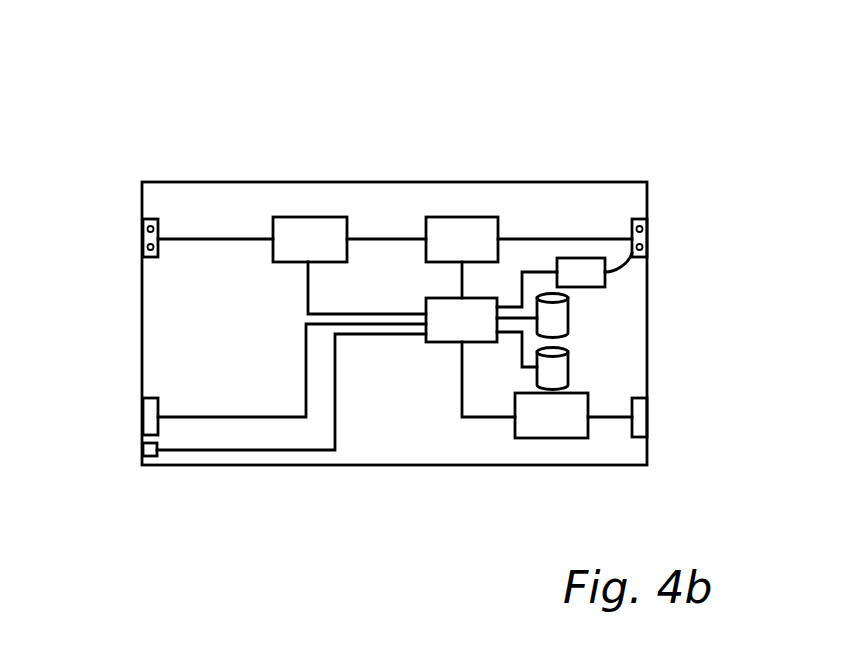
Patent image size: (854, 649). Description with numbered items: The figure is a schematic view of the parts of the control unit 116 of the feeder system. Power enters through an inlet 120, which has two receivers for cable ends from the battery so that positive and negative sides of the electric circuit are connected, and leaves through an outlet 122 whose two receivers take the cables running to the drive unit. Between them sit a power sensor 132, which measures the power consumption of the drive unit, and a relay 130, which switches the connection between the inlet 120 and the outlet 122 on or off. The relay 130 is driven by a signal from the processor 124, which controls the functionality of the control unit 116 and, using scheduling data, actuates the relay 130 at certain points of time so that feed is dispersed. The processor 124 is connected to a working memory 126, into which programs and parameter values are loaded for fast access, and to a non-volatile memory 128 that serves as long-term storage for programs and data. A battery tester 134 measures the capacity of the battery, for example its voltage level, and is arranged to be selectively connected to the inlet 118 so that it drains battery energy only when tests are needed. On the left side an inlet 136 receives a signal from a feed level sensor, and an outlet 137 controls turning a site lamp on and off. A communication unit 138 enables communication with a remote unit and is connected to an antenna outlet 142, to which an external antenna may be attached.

The control unit 116 is at (394, 281).
The inlet 118 is at (620, 182).
The inlet 120 is at (648, 238).
The outlet 122 is at (139, 239).
The processor 124 is at (442, 342).
The working memory 126 is at (568, 367).
The non-volatile memory 128 is at (568, 316).
The relay 130 is at (460, 217).
The power sensor 132 is at (308, 217).
The battery tester 134 is at (607, 283).
The inlet 136 is at (141, 415).
The outlet 137 is at (141, 450).
The communication unit 138 is at (547, 438).
The antenna outlet 142 is at (640, 422).